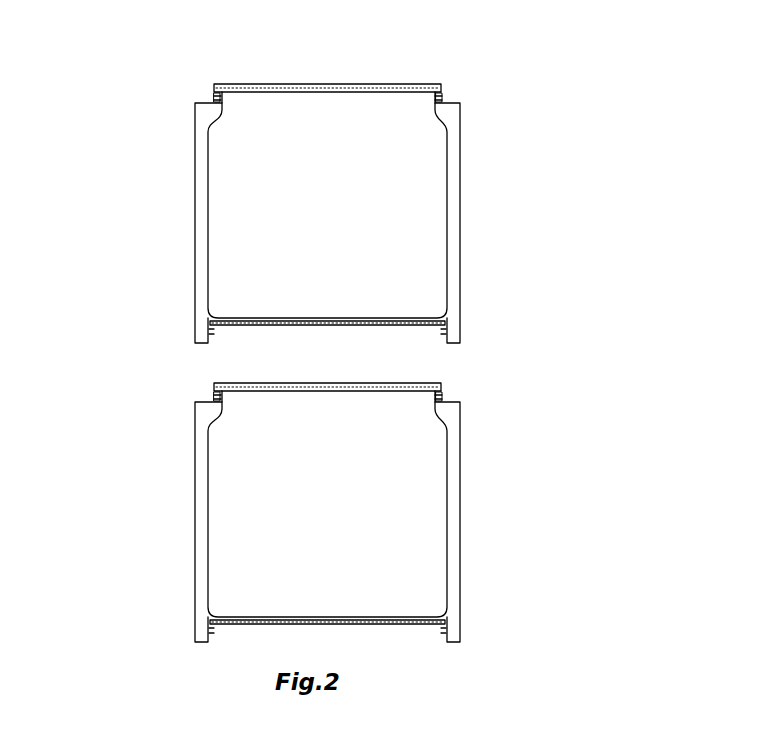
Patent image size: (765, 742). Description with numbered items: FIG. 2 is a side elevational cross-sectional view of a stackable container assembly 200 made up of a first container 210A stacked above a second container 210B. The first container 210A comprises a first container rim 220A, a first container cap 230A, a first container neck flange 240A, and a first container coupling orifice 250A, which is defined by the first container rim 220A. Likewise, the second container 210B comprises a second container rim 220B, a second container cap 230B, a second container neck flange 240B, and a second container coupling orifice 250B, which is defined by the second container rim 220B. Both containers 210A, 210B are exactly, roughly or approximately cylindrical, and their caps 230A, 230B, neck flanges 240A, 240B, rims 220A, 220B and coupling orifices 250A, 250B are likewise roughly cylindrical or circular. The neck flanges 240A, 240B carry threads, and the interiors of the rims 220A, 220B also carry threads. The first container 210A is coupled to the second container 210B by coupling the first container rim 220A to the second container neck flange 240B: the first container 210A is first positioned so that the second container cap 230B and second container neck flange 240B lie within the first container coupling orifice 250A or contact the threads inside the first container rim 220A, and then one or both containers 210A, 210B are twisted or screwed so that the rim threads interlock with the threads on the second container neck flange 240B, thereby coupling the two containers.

The stacked battery module assembly 200 is at (565, 318).
The first container 210A is at (143, 215).
The second container 210B is at (143, 514).
The first container rim 220A is at (196, 342).
The second container rim 220B is at (196, 641).
The first container cap 230A is at (272, 84).
The second container cap 230B is at (335, 383).
The first container neck flange 240A is at (443, 93).
The second container neck flange 240B is at (443, 392).
The first container coupling orifice 250A is at (394, 334).
The second container coupling orifice 250B is at (413, 632).